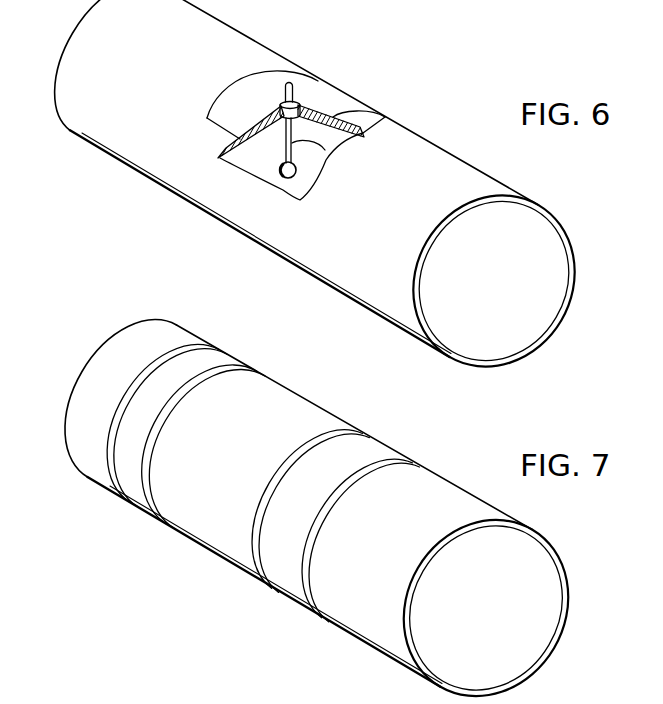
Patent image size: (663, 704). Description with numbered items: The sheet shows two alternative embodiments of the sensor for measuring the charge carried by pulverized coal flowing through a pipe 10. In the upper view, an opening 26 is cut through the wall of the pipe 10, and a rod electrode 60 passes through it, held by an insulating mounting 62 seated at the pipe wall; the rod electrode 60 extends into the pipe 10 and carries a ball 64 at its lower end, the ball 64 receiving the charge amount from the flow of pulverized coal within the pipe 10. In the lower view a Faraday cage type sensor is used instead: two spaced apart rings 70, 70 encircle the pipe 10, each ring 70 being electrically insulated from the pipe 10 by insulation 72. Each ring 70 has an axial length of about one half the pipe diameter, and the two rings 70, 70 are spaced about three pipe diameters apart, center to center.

In FIG. 6, the pipe 10 is at (140, 163).
In FIG. 7, the pipe 10 is at (193, 523).
In FIG. 6, the opening in pipe wall 26 is at (392, 97).
In FIG. 6, the rod electrode 60 is at (335, 157).
In FIG. 6, the insulating mounting 62 is at (303, 107).
In FIG. 6, the ball 64 is at (293, 177).
In FIG. 7, the ring 70 is at (277, 336).
In FIG. 7, the insulation 72 is at (262, 376).